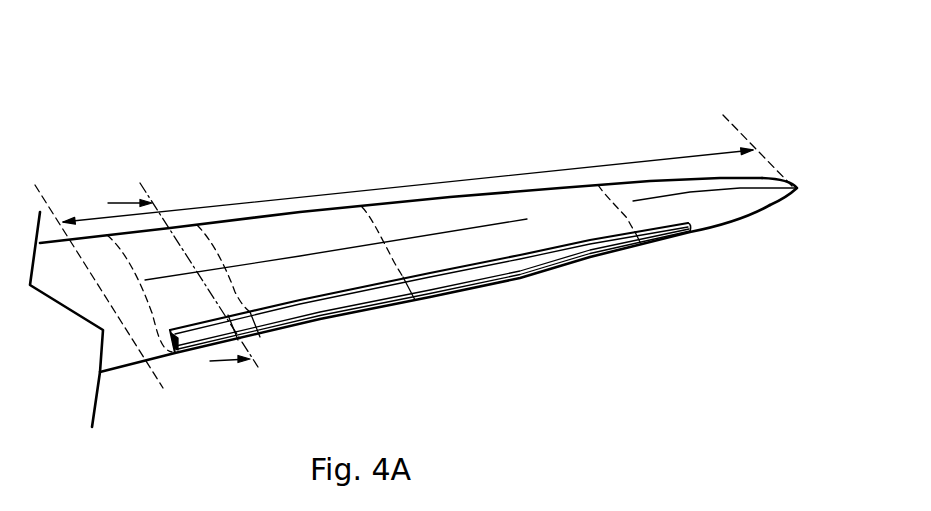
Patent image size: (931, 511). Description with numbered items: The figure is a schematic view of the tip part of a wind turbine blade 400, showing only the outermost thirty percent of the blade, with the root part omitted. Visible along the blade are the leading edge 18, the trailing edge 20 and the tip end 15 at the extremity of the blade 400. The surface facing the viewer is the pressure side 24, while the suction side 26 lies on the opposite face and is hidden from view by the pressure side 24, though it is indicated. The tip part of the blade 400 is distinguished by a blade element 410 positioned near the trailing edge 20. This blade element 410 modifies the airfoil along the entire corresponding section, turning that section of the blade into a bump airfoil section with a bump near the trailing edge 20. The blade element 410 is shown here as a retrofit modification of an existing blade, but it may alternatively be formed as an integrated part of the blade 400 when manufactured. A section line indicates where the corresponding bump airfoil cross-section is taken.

The wind turbine blade 400 is at (150, 54).
The tip end 15 is at (799, 188).
The leading edge 18 is at (690, 178).
The trailing edge 20 is at (723, 223).
The pressure side 24 is at (397, 216).
The suction side 26 is at (276, 236).
The blade element 410 is at (508, 265).